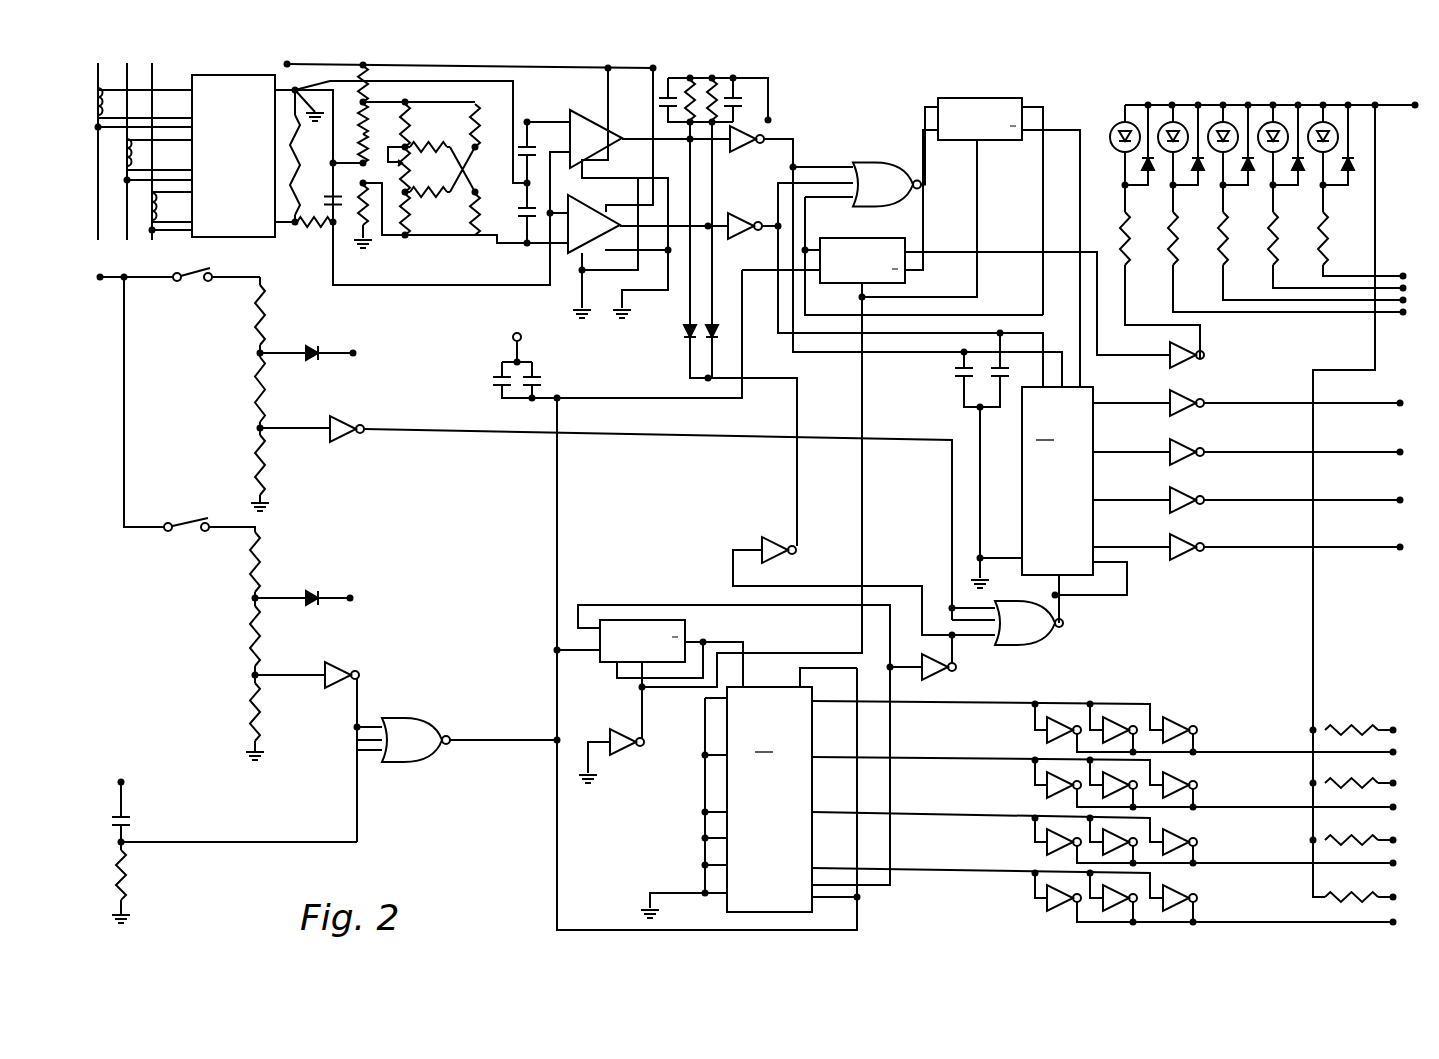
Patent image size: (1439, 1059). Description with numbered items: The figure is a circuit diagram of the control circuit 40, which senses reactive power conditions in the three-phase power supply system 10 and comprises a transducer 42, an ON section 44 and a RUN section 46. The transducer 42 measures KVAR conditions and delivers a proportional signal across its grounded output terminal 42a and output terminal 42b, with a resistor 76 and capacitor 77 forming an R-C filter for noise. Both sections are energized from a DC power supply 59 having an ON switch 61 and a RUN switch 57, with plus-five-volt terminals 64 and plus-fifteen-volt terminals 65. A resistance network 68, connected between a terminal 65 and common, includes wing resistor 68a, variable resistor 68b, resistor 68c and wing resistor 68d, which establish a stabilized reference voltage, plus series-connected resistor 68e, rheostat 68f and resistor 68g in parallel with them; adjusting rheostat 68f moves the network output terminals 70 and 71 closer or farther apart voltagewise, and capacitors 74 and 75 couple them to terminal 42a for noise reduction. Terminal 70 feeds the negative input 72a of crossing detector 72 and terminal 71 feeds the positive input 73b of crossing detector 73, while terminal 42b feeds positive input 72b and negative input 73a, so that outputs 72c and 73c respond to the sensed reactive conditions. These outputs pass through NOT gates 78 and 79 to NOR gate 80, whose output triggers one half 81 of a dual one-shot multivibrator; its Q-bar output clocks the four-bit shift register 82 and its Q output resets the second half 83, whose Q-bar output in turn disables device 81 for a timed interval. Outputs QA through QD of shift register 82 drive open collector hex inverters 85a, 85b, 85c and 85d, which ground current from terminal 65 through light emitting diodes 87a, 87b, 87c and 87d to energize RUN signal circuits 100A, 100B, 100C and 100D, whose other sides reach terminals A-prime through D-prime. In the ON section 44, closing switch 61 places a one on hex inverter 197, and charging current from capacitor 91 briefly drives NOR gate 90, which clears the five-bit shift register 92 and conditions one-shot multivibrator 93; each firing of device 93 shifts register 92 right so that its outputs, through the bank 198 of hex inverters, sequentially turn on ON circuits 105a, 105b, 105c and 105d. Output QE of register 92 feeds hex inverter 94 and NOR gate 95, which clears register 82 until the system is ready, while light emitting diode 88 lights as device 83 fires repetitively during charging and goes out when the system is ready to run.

The multi-phase alternating current electric power supply system 10 is at (115, 244).
The control circuit 40 is at (160, 577).
The transducer 42 is at (218, 74).
The output terminal 42a is at (293, 88).
The output terminal 42b is at (297, 230).
The ON section 44 is at (215, 641).
The RUN section 46 is at (468, 300).
The RUN section switch 57 is at (213, 278).
The DC power supply 59 is at (198, 388).
The ON section switch 61 is at (196, 514).
The terminals 64 is at (768, 120).
The terminals 65 is at (287, 66).
The resistance network 68 is at (404, 166).
The wing resistor 68a is at (359, 232).
The variable resistor 68b is at (360, 156).
The resistor 68c is at (370, 121).
The wing resistor 68d is at (370, 94).
The resistor 68e is at (410, 212).
The rheostat 68f is at (410, 166).
The resistor 68g is at (410, 120).
The output terminal 70 is at (490, 230).
The output terminal 71 is at (482, 126).
The crossing detector device 72 is at (602, 114).
The negative input terminal 72a is at (556, 118).
The positive input terminal 72b is at (564, 154).
The output terminal 72c is at (624, 135).
The crossing detector device 73 is at (601, 218).
The negative input terminal 73a is at (554, 207).
The positive input terminal 73b is at (560, 250).
The output terminal 73c is at (610, 244).
The capacitor 74 is at (527, 124).
The capacitor 75 is at (528, 240).
The resistor 76 is at (300, 214).
The capacitor 77 is at (333, 196).
The NOT gate 78 is at (736, 160).
The NOT gate 79 is at (736, 222).
The three input NOR gate 80 is at (900, 148).
The dual retriggerable one-shot multivibrator 81 is at (995, 84).
The shift register 82 is at (943, 377).
The second half of dual retriggerable one-shot multivibrator 83 is at (868, 238).
The hex inverter 85a is at (1180, 396).
The hex inverter 85b is at (1180, 445).
The hex inverter 85c is at (1180, 493).
The hex inverter 85d is at (1180, 540).
The light emitting diode 87a is at (1342, 104).
The light emitting diode 87b is at (1285, 103).
The light emitting diode 87c is at (1233, 103).
The light emitting diode 87d is at (1178, 103).
The light emitting diode 88 is at (1112, 114).
The NOR gate 90 is at (406, 720).
The capacitor 91 is at (130, 816).
The shift register 92 is at (765, 793).
The single retriggerable one-shot multivibrator 93 is at (689, 627).
The hex inverter 94 is at (930, 680).
The NOR gate 95 is at (1016, 650).
The RUN signal circuit 100A is at (1412, 266).
The RUN signal circuit 100B is at (1406, 288).
The RUN signal circuit 100C is at (1408, 328).
The RUN signal circuit 100D is at (1408, 320).
The ON circuit 105a is at (1345, 748).
The ON circuit 105b is at (1345, 800).
The ON circuit 105c is at (1345, 856).
The ON circuit 105d is at (1345, 914).
The hex inverter 197 is at (348, 666).
The bank of hex inverters 198 is at (784, 529).